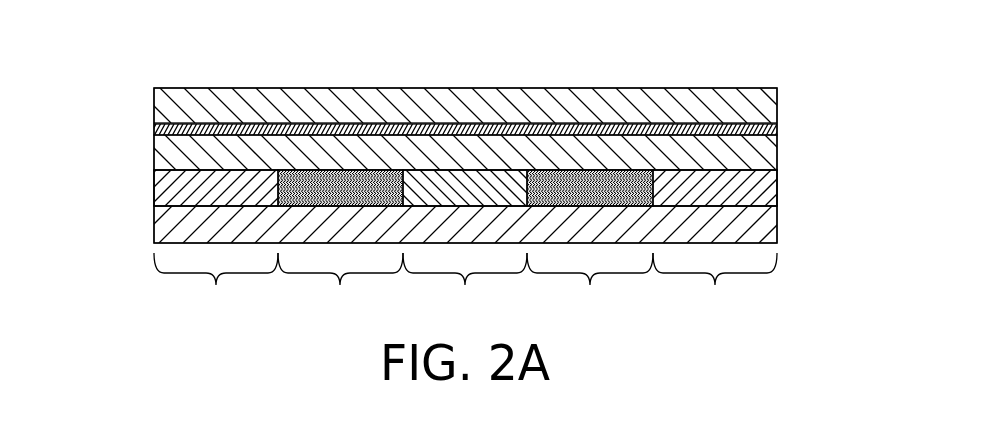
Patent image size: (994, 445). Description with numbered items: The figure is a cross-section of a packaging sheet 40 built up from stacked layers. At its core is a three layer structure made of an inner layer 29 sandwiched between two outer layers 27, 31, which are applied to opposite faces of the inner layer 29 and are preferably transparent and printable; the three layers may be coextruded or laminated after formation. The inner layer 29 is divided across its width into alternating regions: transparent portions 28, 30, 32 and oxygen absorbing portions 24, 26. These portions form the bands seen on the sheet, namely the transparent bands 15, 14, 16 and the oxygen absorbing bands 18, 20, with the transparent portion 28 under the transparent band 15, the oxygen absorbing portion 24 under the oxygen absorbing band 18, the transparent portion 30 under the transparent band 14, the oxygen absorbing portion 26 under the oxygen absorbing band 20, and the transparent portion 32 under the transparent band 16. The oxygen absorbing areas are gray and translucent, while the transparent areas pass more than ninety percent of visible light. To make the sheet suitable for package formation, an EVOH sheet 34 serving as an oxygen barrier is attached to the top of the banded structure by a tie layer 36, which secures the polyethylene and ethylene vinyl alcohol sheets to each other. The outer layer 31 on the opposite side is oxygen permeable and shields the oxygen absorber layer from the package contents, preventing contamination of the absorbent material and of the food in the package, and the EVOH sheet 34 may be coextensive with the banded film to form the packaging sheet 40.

The packaging sheet 40 is at (130, 88).
The EVOH sheet 34 is at (753, 110).
The tie layer 36 is at (155, 127).
The outer layer 27 is at (758, 155).
The inner layer 29 is at (790, 172).
The transparent portion 28 is at (216, 185).
The oxygen absorbing portion 24 is at (342, 185).
The transparent portion 30 is at (460, 187).
The oxygen absorbing portion 26 is at (583, 187).
The transparent portion 32 is at (712, 187).
The outer layer 31 is at (758, 223).
The transparent band 15 is at (216, 285).
The oxygen absorbing band 18 is at (340, 285).
The transparent band 14 is at (465, 285).
The oxygen absorbing band 20 is at (590, 285).
The transparent band 16 is at (715, 285).